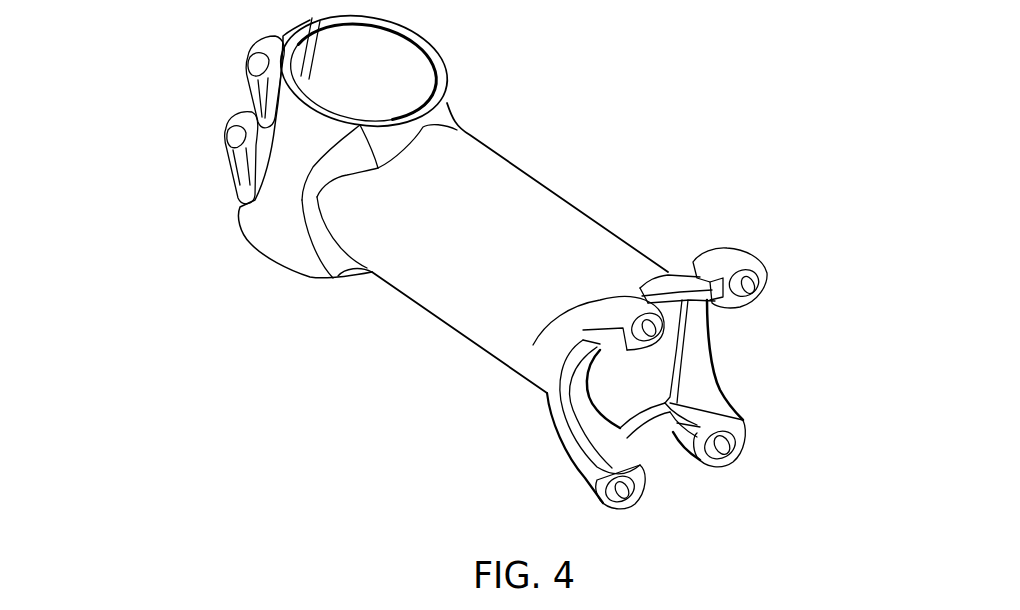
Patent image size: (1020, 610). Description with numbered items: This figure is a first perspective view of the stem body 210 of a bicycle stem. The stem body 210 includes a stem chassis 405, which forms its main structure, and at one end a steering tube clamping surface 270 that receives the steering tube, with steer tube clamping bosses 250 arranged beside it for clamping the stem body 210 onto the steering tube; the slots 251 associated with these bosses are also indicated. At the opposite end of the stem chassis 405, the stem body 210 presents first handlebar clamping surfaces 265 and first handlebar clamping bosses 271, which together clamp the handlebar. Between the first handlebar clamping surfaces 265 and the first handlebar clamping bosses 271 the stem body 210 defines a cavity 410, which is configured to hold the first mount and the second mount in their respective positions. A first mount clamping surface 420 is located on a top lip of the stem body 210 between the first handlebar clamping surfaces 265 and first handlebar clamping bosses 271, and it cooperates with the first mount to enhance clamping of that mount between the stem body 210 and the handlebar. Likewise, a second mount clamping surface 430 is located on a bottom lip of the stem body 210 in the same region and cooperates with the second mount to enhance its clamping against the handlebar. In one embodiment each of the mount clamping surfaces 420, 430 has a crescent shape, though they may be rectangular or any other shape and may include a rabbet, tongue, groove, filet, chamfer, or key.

The stem body 210 is at (143, 62).
The steer tube clamping bosses 250 is at (250, 50).
The bolt slot 251 is at (242, 72).
The first handlebar clamping surfaces 265 is at (692, 350).
The steering tube clamping surface 270 is at (370, 70).
The first handlebar clamping bosses 271 is at (730, 258).
The stem chassis 405 is at (465, 227).
The cavity 410 is at (630, 378).
The first mount clamping surface 420 is at (653, 280).
The second mount clamping surface 430 is at (650, 410).